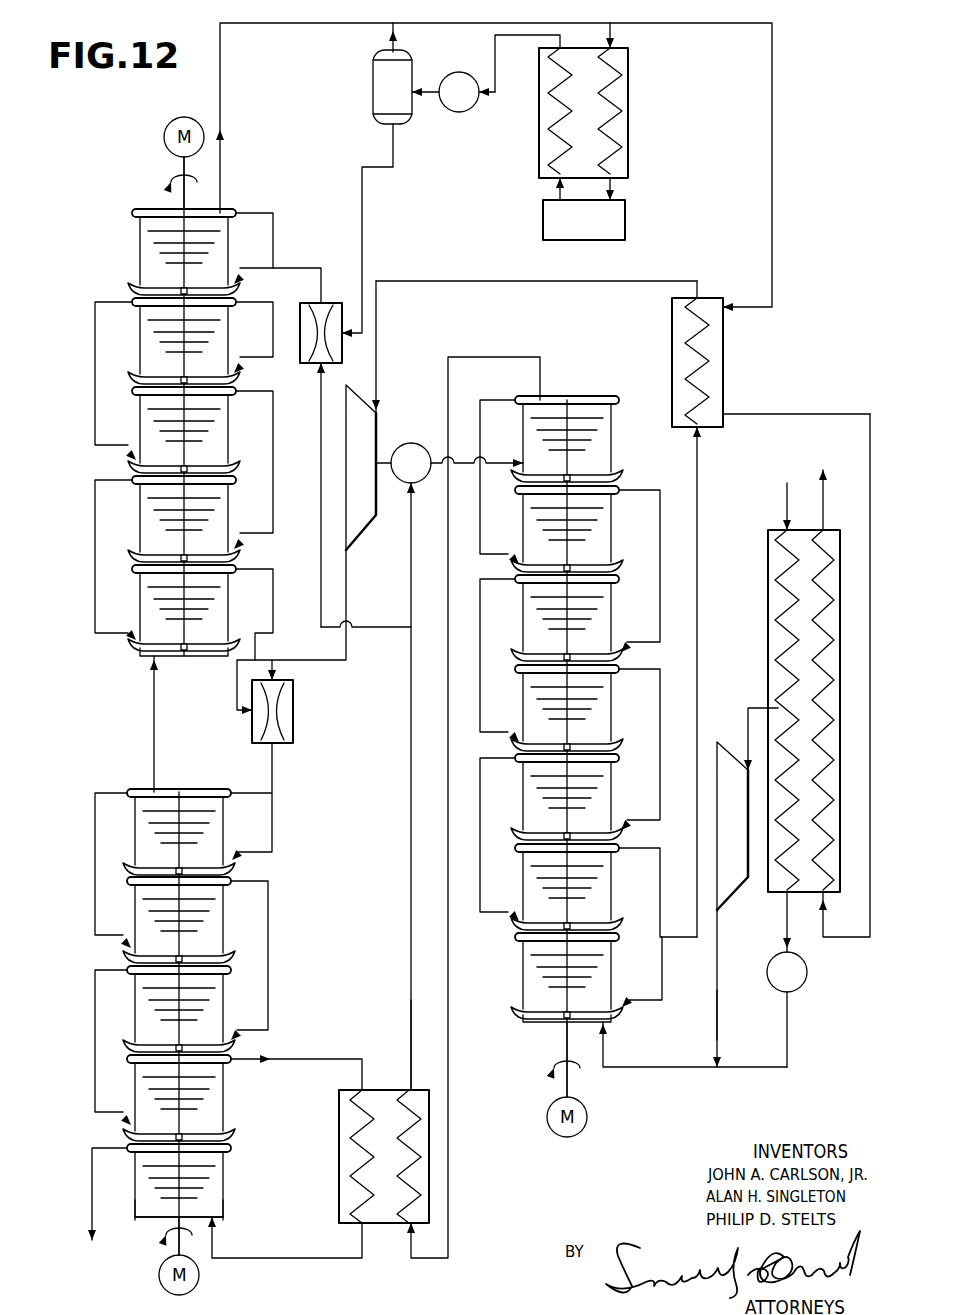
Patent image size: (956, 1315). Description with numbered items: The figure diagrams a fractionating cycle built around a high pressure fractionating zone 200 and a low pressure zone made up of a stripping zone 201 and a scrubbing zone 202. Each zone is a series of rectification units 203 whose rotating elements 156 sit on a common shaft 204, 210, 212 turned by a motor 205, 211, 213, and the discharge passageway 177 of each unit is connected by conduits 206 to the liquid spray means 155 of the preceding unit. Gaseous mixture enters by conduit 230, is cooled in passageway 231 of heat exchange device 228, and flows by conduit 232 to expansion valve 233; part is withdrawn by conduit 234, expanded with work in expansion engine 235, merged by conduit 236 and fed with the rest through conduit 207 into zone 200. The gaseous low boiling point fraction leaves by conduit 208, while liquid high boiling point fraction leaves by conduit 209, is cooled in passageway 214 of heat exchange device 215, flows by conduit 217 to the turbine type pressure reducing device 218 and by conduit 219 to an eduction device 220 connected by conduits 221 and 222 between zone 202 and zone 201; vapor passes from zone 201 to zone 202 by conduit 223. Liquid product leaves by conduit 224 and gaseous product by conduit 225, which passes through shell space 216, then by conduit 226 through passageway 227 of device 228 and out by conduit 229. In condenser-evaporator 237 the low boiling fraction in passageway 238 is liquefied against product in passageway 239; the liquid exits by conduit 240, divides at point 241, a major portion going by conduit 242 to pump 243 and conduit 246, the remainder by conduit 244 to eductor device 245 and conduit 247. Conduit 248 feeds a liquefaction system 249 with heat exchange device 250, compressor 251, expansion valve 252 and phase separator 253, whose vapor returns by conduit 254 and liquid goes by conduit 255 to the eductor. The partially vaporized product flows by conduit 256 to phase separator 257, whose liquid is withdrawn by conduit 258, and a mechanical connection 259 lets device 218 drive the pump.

The liquid spray means 155 is at (140, 276).
The rotating element 156 is at (212, 245).
The discharge passageway 177 is at (232, 210).
The high pressure fractionating zone 200 is at (600, 386).
The stripping zone 201 is at (200, 764).
The scrubbing zone 202 is at (132, 234).
The rectification unit 203 is at (232, 254).
The common shaft 204 is at (566, 1040).
The motor 205 is at (578, 1134).
The conduits 206 is at (264, 309).
The conduit 207 is at (643, 1068).
The conduit 208 is at (510, 356).
The conduit 209 is at (699, 454).
The common shaft 210 is at (164, 1246).
The motor 211 is at (198, 1270).
The common shaft 212 is at (160, 165).
The motor 213 is at (194, 117).
The passageway 214 is at (718, 341).
The heat exchange device 215 is at (706, 280).
The shell space 216 is at (722, 388).
The conduit 217 is at (518, 280).
The turbine type pressure reducing device 218 is at (370, 418).
The conduit 219 is at (347, 592).
The eduction device 220 is at (295, 731).
The conduit 221 is at (236, 676).
The conduit 222 is at (274, 800).
The conduit 223 is at (152, 722).
The conduit 224 is at (298, 1058).
The conduit 225 is at (220, 167).
The conduit 226 is at (860, 412).
The passageway 227 is at (829, 758).
The heat exchange device 228 is at (764, 608).
The conduit 229 is at (822, 496).
The conduit 230 is at (785, 500).
The passageway 231 is at (770, 656).
The conduit 232 is at (786, 912).
The expansion valve 233 is at (793, 1000).
The conduit 234 is at (742, 714).
The expansion engine 235 is at (742, 930).
The conduit 236 is at (719, 1009).
The condenser-evaporator 237 is at (376, 1078).
The passageway 238 is at (412, 1096).
The passageway 239 is at (340, 1148).
The conduit 240 is at (409, 970).
The point 241 is at (405, 630).
The conduit 242 is at (411, 590).
The pump 243 is at (392, 444).
The conduit 244 is at (318, 574).
The eductor device 245 is at (327, 300).
The conduit 246 is at (458, 460).
The conduit 247 is at (296, 266).
The conduit 248 is at (614, 30).
The liquefaction system 249 is at (522, 83).
The heat exchange device 250 is at (628, 126).
The compressor 251 is at (625, 218).
The expansion valve 252 is at (464, 114).
The phase separator 253 is at (370, 90).
The conduit 254 is at (386, 44).
The conduit 255 is at (365, 202).
The conduit 256 is at (296, 1248).
The phase separator 257 is at (225, 1190).
The conduit 258 is at (91, 1208).
The mechanical connection 259 is at (384, 478).